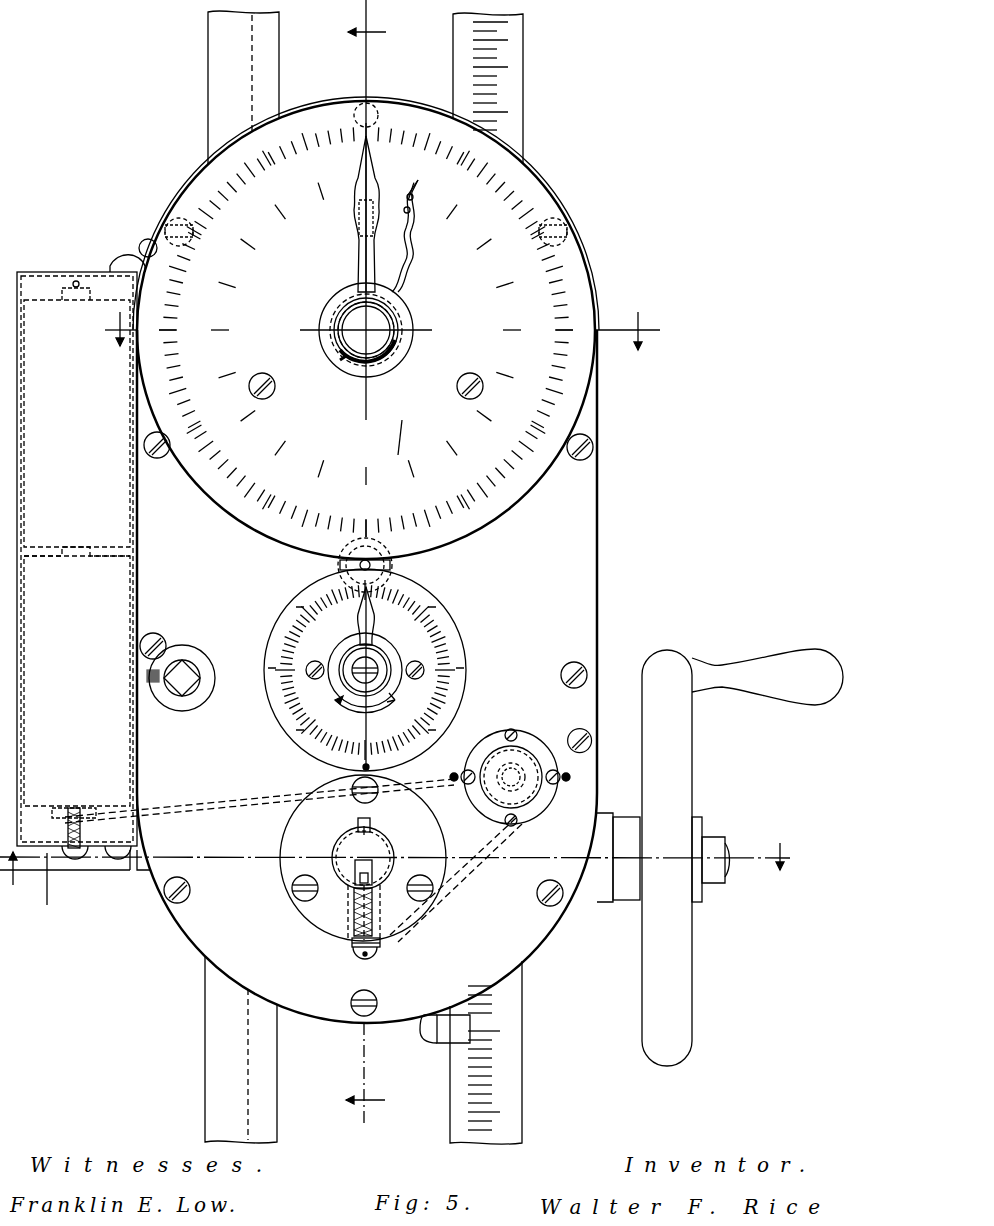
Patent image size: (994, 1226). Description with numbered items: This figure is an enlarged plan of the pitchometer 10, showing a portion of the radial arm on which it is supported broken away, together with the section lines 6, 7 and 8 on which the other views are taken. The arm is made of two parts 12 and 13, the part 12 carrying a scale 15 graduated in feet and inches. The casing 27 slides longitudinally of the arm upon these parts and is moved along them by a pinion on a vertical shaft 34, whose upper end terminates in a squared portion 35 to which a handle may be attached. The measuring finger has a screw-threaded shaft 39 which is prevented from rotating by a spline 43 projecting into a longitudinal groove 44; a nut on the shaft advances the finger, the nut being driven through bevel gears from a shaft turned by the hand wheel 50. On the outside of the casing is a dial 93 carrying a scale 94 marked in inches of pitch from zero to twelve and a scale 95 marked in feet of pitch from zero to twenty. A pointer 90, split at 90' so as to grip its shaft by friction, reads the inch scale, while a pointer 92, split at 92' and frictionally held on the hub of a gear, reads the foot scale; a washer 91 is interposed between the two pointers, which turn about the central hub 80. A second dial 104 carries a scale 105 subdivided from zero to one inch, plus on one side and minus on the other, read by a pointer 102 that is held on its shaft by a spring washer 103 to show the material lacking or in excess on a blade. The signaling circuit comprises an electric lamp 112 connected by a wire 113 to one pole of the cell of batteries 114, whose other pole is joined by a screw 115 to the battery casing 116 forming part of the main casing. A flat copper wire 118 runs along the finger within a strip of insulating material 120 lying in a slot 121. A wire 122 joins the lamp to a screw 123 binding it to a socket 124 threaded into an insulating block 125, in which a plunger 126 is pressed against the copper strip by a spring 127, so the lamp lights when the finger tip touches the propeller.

The section line 6- 6 is at (368, 565).
The section line 7- 7 is at (412, 869).
The section line 8- 8 is at (388, 331).
The pitchometer 10 is at (385, 347).
The arm part 12 is at (520, 97).
The arm part 13 is at (226, 74).
The scale 15 is at (478, 54).
The casing 27 is at (588, 512).
The vertical shaft 34 is at (195, 664).
The squared portion 35 is at (185, 692).
The screw-threaded shaft 39 is at (352, 846).
The spline 43 is at (373, 826).
The groove 44 is at (358, 826).
The hand wheel 50 is at (690, 980).
The pointer hub 80 is at (405, 342).
The pointer 90 is at (383, 214).
The split 90' is at (372, 355).
The washer 91 is at (395, 358).
The pointer 92 is at (416, 236).
The split 92' is at (335, 382).
The dial 93 is at (226, 506).
The scale 94 is at (540, 440).
The scale 95 is at (411, 427).
The pointer 102 is at (386, 602).
The spring washer 103 is at (332, 680).
The dial 104 is at (462, 700).
The scale 105 is at (460, 656).
The electric lamp 112 is at (525, 760).
The wire 113 is at (240, 806).
The cell of batteries 114 is at (48, 300).
The screw 115 is at (76, 862).
The casing 116 is at (48, 876).
The flat copper wire 118 is at (372, 880).
The strip of insulating material 120 is at (352, 862).
The slot 121 is at (378, 865).
The wire 122 is at (455, 876).
The screw 123 is at (372, 960).
The socket 124 is at (382, 946).
The insulating block 125 is at (350, 937).
The plunger 126 is at (362, 880).
The spring 127 is at (400, 922).